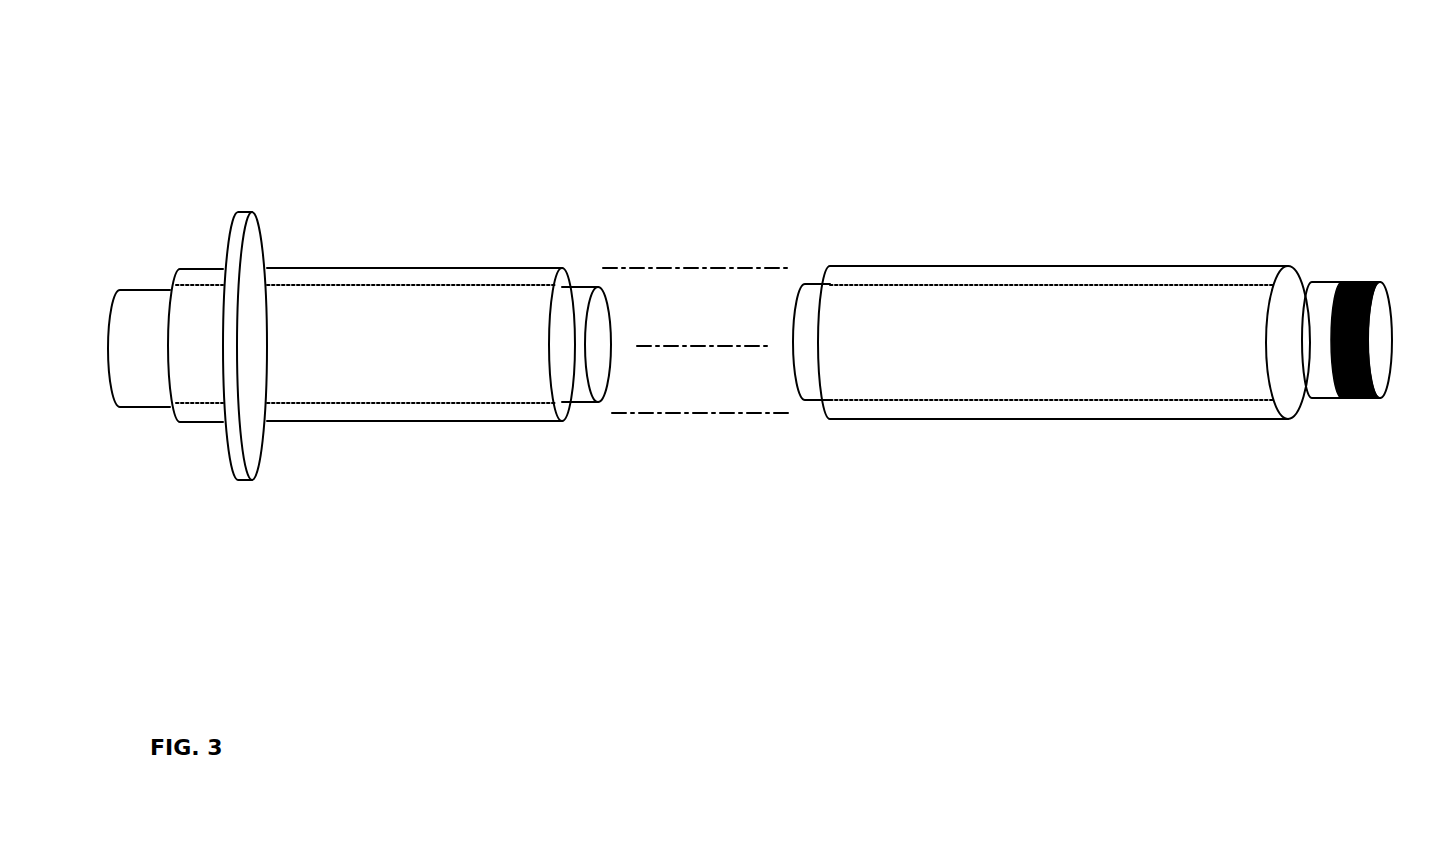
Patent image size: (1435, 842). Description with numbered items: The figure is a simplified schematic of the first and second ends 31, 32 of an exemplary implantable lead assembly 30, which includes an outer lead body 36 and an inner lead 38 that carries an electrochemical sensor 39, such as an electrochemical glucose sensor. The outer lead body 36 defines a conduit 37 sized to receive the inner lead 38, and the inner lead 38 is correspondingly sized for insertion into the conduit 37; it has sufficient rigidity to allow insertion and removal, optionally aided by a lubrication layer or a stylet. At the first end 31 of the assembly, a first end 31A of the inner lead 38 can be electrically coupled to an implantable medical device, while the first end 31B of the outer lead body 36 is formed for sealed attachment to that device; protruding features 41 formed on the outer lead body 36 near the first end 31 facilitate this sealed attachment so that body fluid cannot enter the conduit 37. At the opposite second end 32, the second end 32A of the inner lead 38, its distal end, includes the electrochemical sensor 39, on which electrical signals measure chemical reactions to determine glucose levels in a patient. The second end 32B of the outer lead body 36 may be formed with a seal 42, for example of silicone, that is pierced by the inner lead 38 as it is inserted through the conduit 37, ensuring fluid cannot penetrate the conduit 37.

The implantable lead assembly 30 is at (676, 186).
The first end 31 is at (163, 192).
The first end of inner lead 31A is at (113, 362).
The first end of outer lead body 31B is at (203, 420).
The second end 32 is at (1376, 200).
The second end of inner lead 32A is at (1383, 322).
The second end of outer lead body 32B is at (1302, 238).
The outer lead body 36 is at (420, 268).
The conduit 37 is at (815, 411).
The inner lead 38 is at (575, 306).
The electrochemical sensor 39 is at (1356, 401).
The protruding features 41 is at (248, 482).
The seal 42 is at (1285, 414).